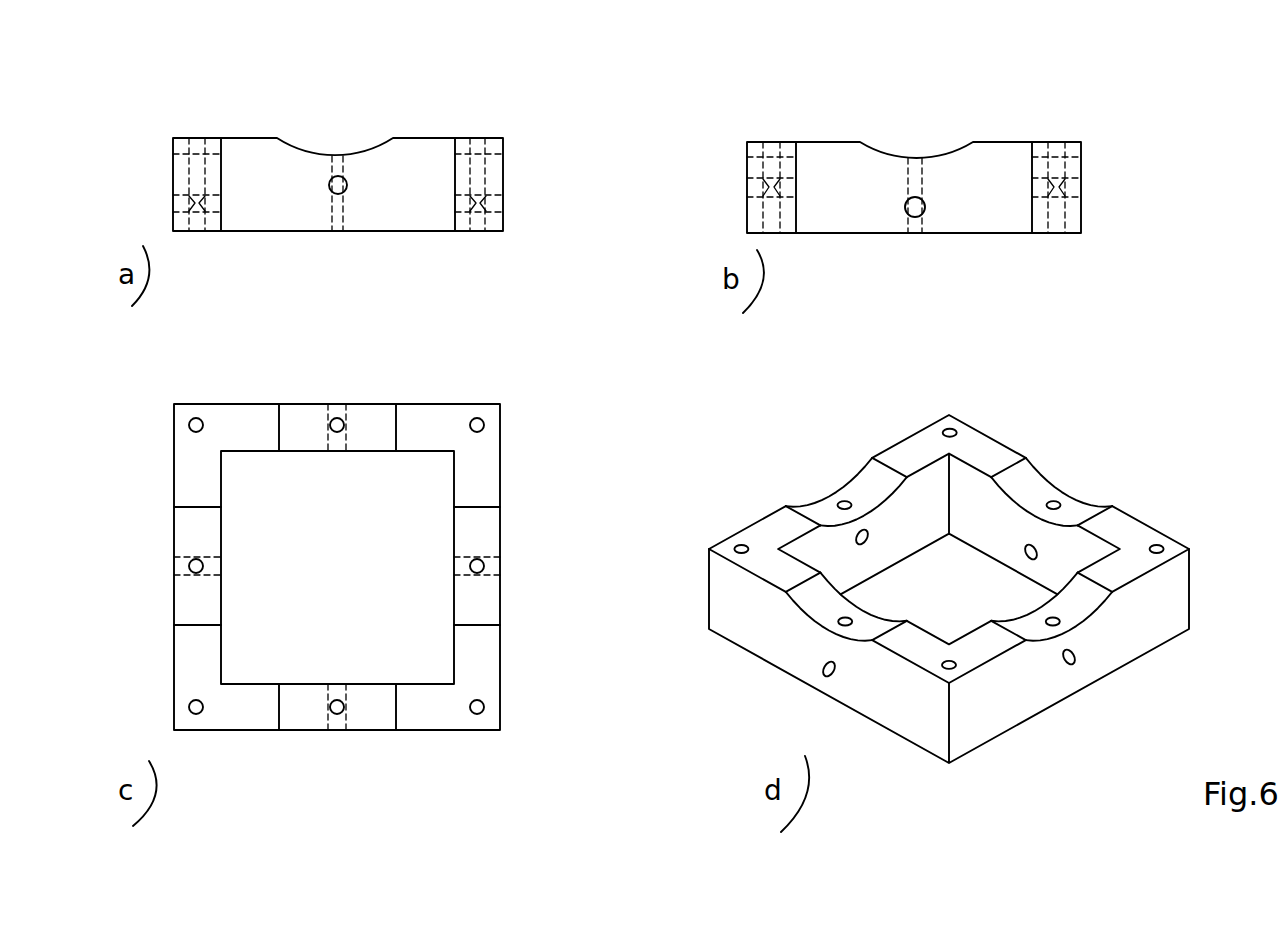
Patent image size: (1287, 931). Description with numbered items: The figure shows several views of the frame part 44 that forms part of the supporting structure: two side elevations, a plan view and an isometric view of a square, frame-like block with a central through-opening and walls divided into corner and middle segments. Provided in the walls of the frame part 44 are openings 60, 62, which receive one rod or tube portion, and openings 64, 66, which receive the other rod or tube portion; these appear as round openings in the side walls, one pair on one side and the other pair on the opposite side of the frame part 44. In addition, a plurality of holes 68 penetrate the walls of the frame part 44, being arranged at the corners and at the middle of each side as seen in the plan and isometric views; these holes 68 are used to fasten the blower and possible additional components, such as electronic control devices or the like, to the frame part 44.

The frame part 44 is at (486, 104).
The opening 60 is at (334, 176).
The opening 62 is at (867, 537).
The opening 64 is at (915, 218).
The opening 66 is at (1036, 549).
The holes 68 is at (478, 232).